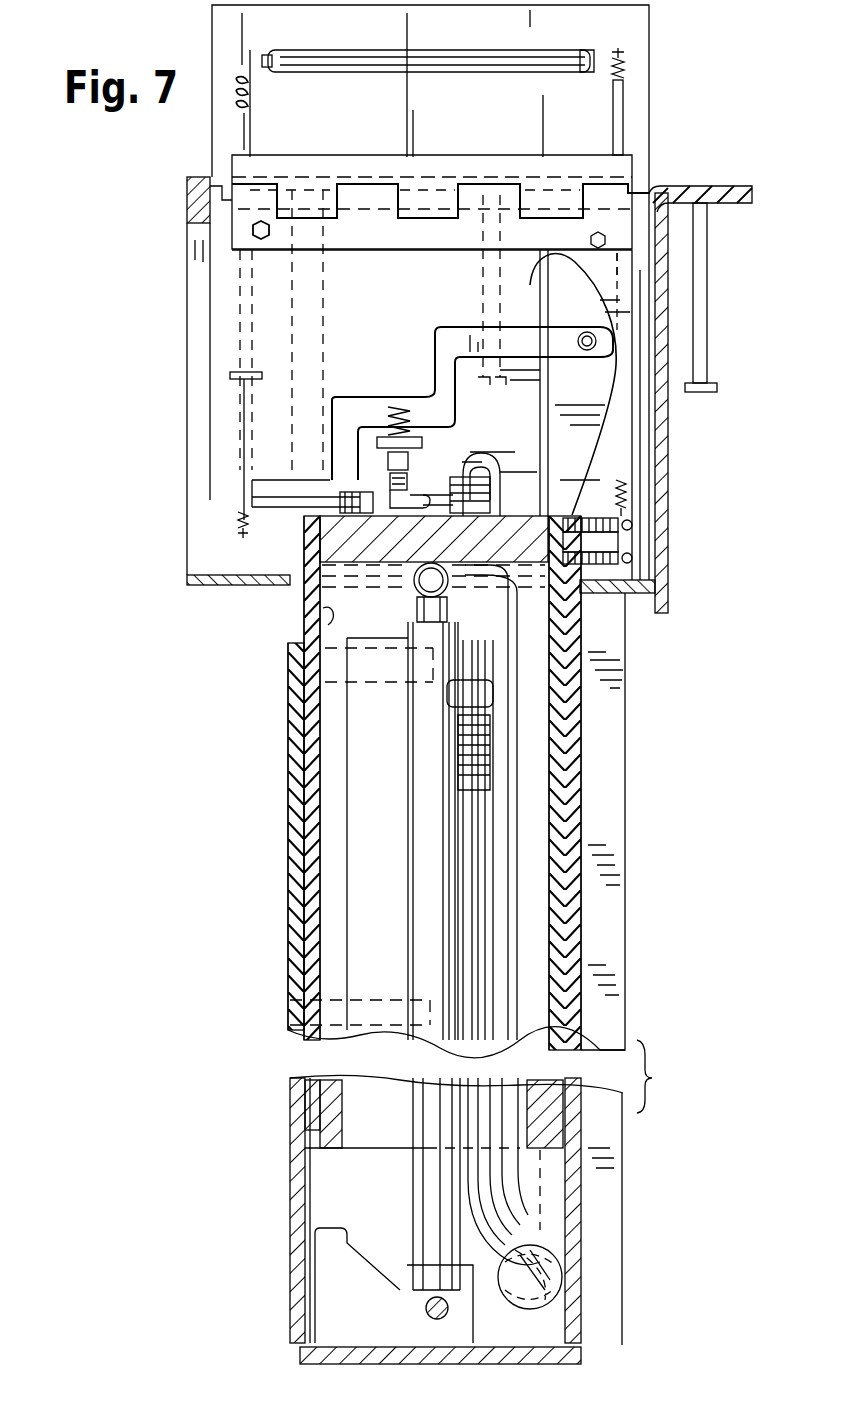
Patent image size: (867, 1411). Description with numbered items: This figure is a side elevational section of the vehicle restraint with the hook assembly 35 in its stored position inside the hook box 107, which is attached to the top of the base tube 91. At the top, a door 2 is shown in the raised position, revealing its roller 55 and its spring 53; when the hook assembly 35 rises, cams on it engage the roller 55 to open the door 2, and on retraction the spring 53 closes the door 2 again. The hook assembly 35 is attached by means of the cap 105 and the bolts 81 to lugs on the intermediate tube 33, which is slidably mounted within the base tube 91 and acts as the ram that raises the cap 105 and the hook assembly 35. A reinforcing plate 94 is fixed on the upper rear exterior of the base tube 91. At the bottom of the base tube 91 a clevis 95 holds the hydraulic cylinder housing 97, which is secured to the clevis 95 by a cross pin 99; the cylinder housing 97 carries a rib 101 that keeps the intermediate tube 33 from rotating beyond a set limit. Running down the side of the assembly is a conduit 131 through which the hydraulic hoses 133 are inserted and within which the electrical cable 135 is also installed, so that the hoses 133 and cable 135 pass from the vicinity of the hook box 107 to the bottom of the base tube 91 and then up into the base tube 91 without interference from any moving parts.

The door 2 is at (632, 32).
The roller 55 is at (563, 53).
The spring 53 is at (618, 125).
The hook assembly 35 is at (403, 303).
The hook box 107 is at (142, 354).
The bolts 81 is at (345, 497).
The cap 105 is at (513, 518).
The base tube 91 is at (298, 615).
The intermediate tube 33 is at (322, 612).
The reinforcing plate 94 is at (283, 812).
The rib 101 is at (392, 793).
The electrical cable 135 is at (508, 952).
The hydraulic cylinder housing 97 is at (400, 1205).
The cross pin 99 is at (400, 1293).
The clevis 95 is at (362, 1318).
The conduit 131 is at (593, 1217).
The hydraulic hoses 133 is at (540, 1262).